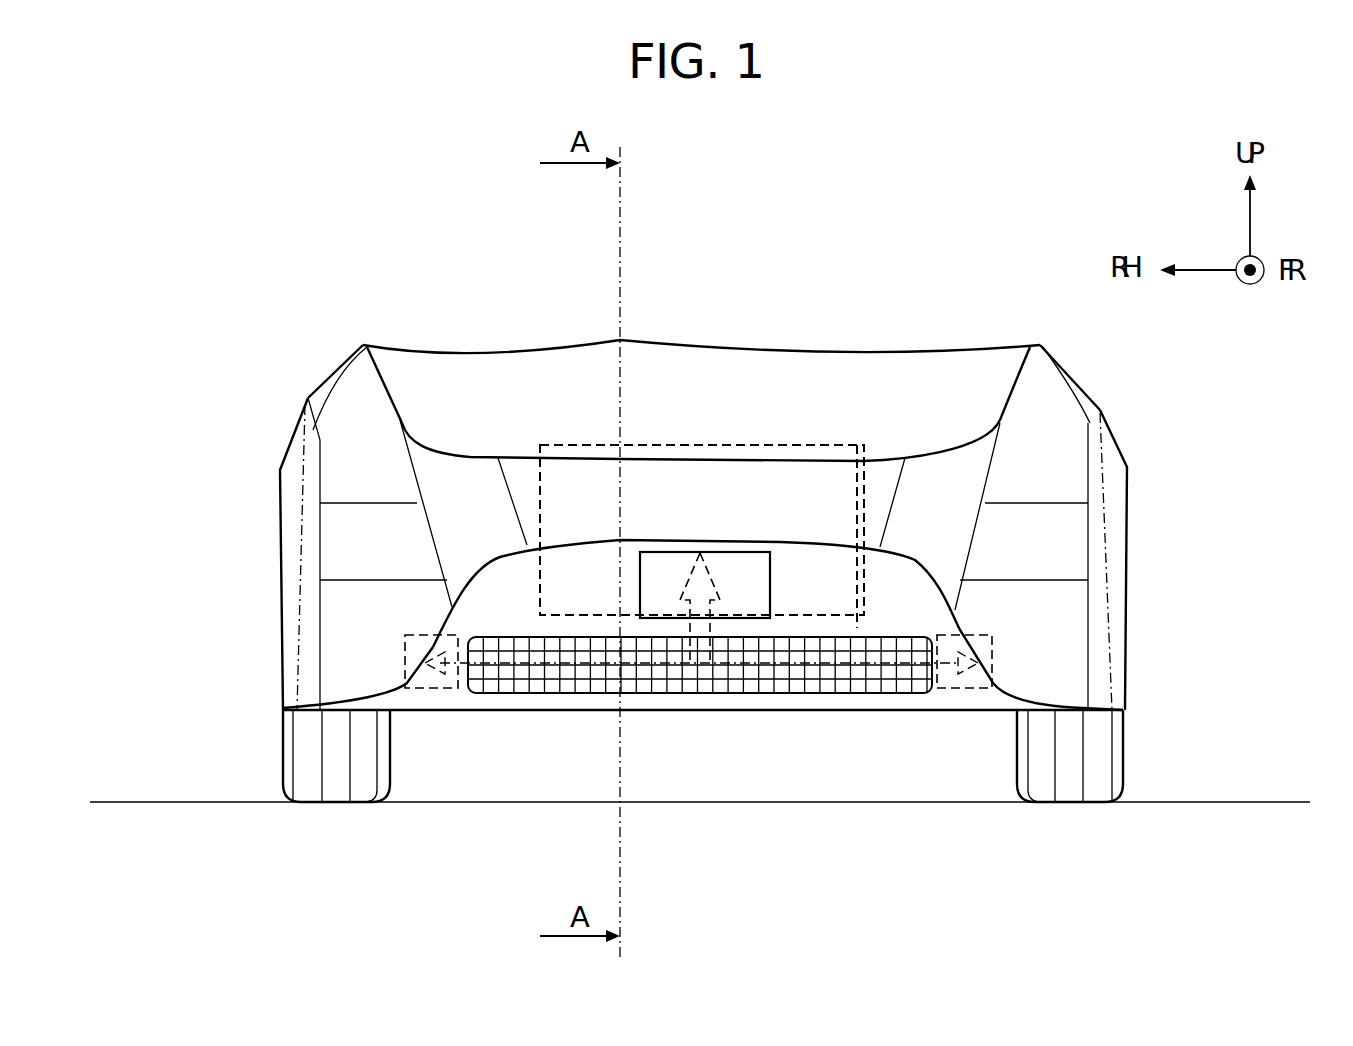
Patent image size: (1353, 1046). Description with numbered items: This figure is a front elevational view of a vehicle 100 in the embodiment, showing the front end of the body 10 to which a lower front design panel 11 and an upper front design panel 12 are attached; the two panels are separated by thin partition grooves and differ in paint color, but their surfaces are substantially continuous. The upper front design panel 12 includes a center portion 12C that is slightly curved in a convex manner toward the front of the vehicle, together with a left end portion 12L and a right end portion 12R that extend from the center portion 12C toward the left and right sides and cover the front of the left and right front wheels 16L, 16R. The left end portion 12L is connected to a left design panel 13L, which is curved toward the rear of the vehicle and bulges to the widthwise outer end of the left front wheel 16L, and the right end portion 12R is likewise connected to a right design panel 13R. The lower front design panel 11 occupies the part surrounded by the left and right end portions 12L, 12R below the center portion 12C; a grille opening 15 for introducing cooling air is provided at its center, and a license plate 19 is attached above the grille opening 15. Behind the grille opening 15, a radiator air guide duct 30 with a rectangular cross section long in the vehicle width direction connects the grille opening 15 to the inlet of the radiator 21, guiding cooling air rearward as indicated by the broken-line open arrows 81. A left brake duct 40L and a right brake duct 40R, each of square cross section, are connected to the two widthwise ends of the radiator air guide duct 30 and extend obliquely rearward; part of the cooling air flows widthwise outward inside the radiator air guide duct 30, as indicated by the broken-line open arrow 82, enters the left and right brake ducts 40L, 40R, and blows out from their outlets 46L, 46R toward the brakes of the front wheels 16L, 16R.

The vehicle 100 is at (183, 318).
The body 10 is at (322, 375).
The lower front design panel 11 is at (812, 593).
The upper front design panel 12 is at (692, 484).
The center portion 12C is at (760, 500).
The right end portion 12R is at (353, 620).
The left end portion 12L is at (1060, 637).
The right design panel 13R is at (288, 447).
The left design panel 13L is at (1127, 445).
The grille opening 15 is at (820, 693).
The right front wheel 16R is at (281, 760).
The left front wheel 16L is at (1123, 762).
The license plate 19 is at (747, 620).
The radiator 21 is at (593, 442).
The radiator air guide duct 30 is at (531, 517).
The right brake duct 40R is at (455, 705).
The left brake duct 40L is at (950, 705).
The outlet 46R is at (452, 625).
The outlet 46L is at (950, 620).
The open arrows 81 is at (700, 553).
The open arrow 82 is at (450, 620).